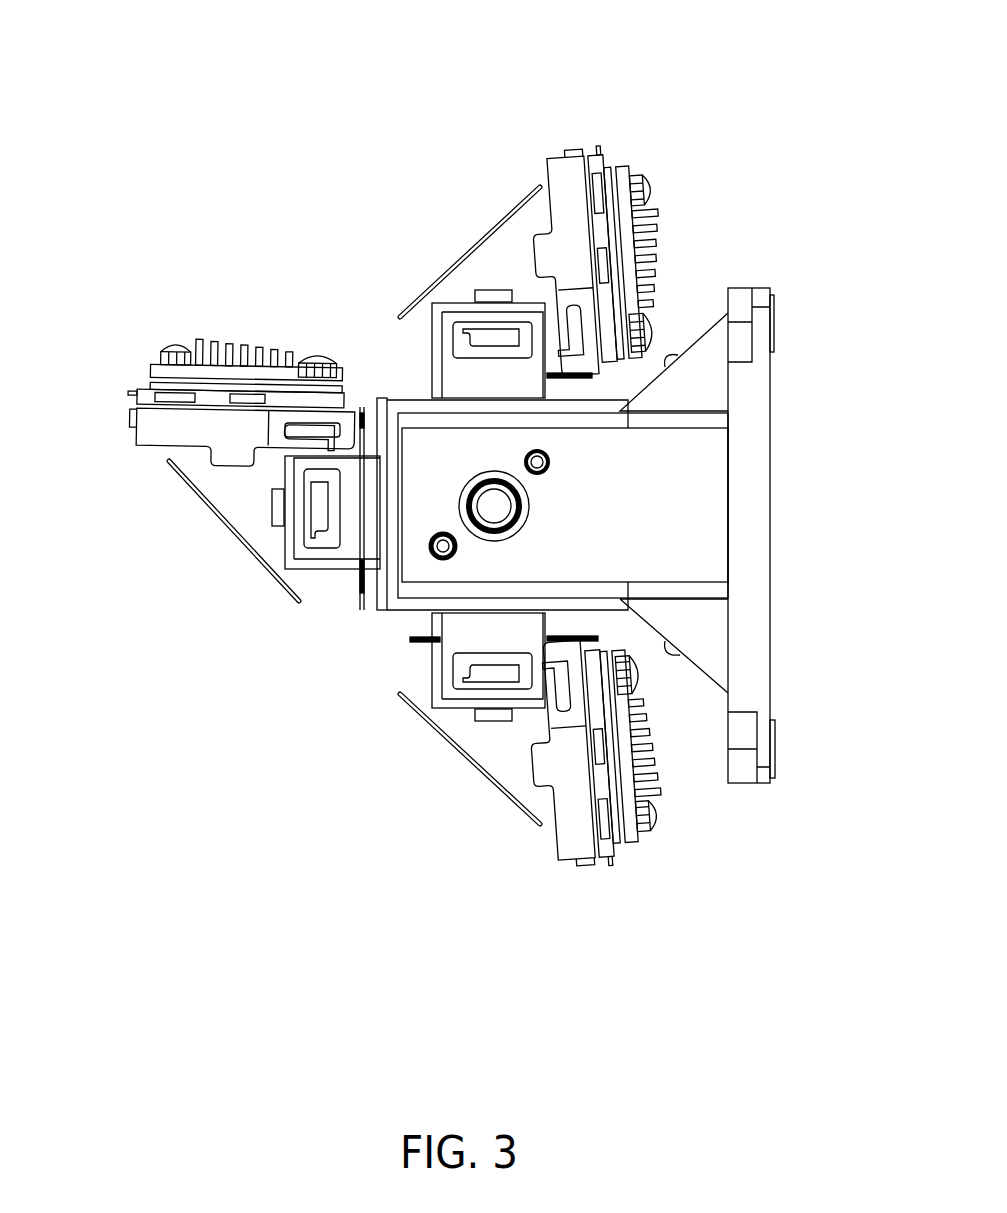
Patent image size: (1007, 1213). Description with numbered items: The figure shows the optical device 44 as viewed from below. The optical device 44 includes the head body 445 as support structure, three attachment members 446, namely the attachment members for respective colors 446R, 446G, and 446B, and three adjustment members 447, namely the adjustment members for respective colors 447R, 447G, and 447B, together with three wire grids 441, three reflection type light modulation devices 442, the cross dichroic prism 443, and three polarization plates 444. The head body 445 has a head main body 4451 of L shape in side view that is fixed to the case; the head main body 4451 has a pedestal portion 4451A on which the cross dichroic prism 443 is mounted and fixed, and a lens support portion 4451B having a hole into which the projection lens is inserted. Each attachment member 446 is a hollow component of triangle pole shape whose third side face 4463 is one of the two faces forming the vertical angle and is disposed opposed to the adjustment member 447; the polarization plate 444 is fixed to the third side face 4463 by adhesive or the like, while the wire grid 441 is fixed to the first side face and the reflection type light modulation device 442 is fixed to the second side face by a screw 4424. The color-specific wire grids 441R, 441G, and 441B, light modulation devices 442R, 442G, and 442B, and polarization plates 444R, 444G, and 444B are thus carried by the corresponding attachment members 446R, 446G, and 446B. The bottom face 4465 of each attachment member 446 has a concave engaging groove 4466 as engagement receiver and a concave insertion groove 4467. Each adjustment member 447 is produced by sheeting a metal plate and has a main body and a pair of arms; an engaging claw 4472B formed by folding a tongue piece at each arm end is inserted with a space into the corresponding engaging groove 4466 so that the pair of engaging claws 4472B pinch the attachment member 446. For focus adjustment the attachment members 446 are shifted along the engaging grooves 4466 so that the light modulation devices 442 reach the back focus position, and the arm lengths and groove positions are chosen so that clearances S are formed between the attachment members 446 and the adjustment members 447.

The optical device 44 is at (723, 88).
The wire grid 441 is at (357, 505).
The wire grid for red 441R is at (489, 224).
The wire grid for green 441G is at (176, 463).
The wire grid for blue 441B is at (527, 810).
The reflection type light modulation device 442 is at (387, 502).
The reflection type light modulation device for red 442R is at (605, 176).
The reflection type light modulation device for green 442G is at (150, 390).
The reflection type light modulation device for blue 442B is at (624, 835).
The screw 4424 is at (170, 347).
The cross dichroic prism 443 is at (386, 613).
The polarization plate 444 is at (480, 508).
The polarization plate for red 444R is at (395, 396).
The polarization plate for green 444G is at (363, 580).
The polarization plate for blue 444B is at (420, 640).
The head body 445 is at (771, 382).
The head main body 4451 is at (769, 431).
The pedestal portion 4451A is at (620, 585).
The lens support portion 4451B is at (767, 463).
The attachment member 446 is at (367, 504).
The attachment member for red 446R is at (532, 218).
The attachment member for green 446G is at (143, 425).
The attachment member for blue 446B is at (585, 835).
The third side face 4463 is at (676, 365).
The bottom face 4465 is at (490, 256).
The engaging groove 4466 is at (482, 333).
The insertion groove 4467 is at (437, 320).
The adjustment member 447 is at (420, 505).
The adjustment member for red 447R is at (532, 372).
The adjustment member for green 447G is at (372, 488).
The adjustment member for blue 447B is at (540, 632).
The engaging claw 4472B is at (493, 326).
The clearance S is at (563, 385).